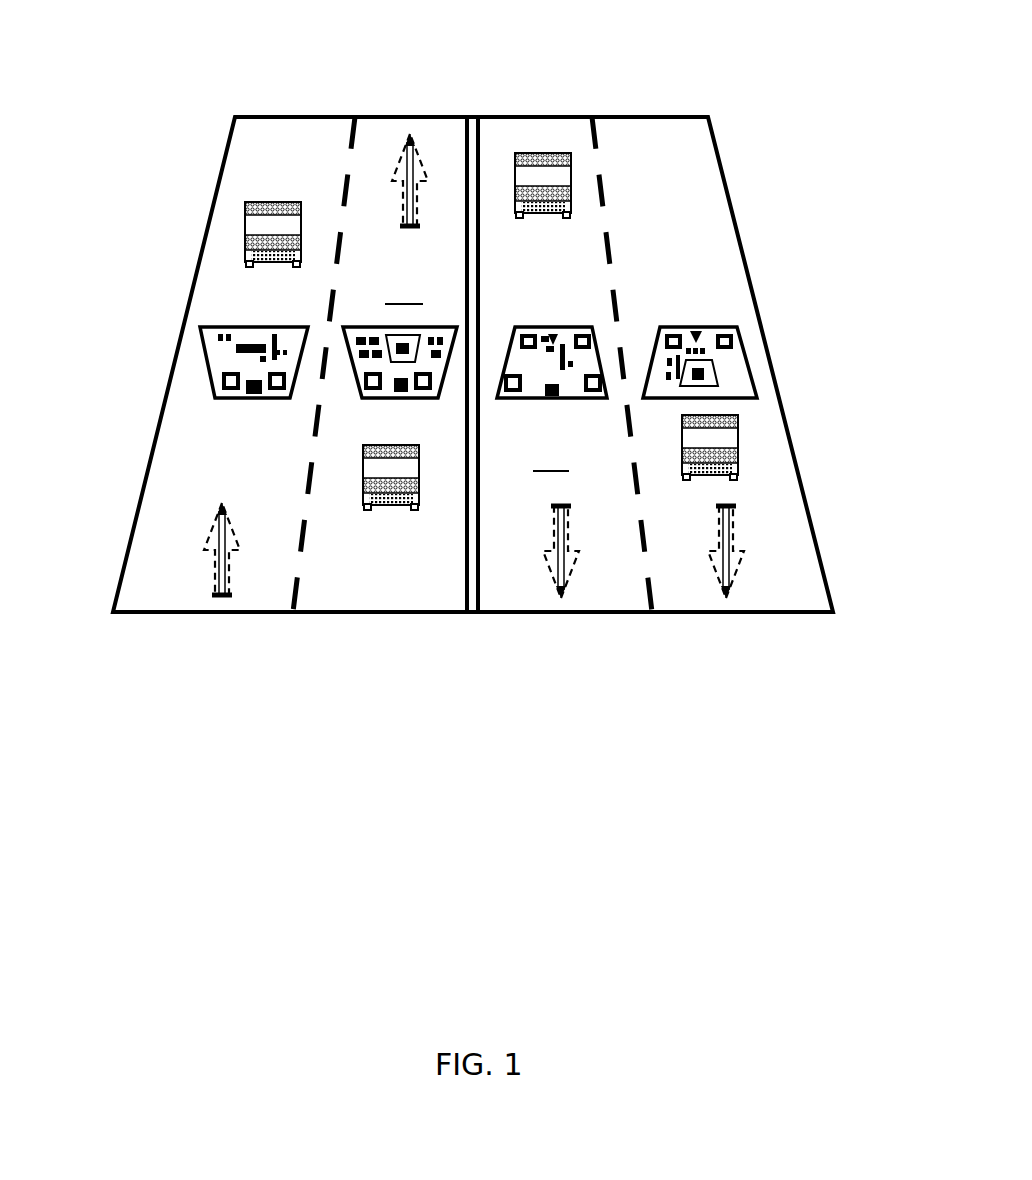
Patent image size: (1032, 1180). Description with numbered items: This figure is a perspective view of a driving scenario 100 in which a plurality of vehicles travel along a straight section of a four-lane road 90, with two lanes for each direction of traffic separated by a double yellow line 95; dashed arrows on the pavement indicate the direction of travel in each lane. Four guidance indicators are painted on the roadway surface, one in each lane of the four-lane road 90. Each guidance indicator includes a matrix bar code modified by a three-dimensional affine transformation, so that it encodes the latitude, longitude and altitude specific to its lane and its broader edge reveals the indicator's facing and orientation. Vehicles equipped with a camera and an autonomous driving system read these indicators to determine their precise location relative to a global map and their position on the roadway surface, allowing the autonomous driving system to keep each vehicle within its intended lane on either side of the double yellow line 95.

The driving scenario 100 is at (288, 52).
The four-lane road 90 is at (205, 462).
The double yellow line 95 is at (475, 105).